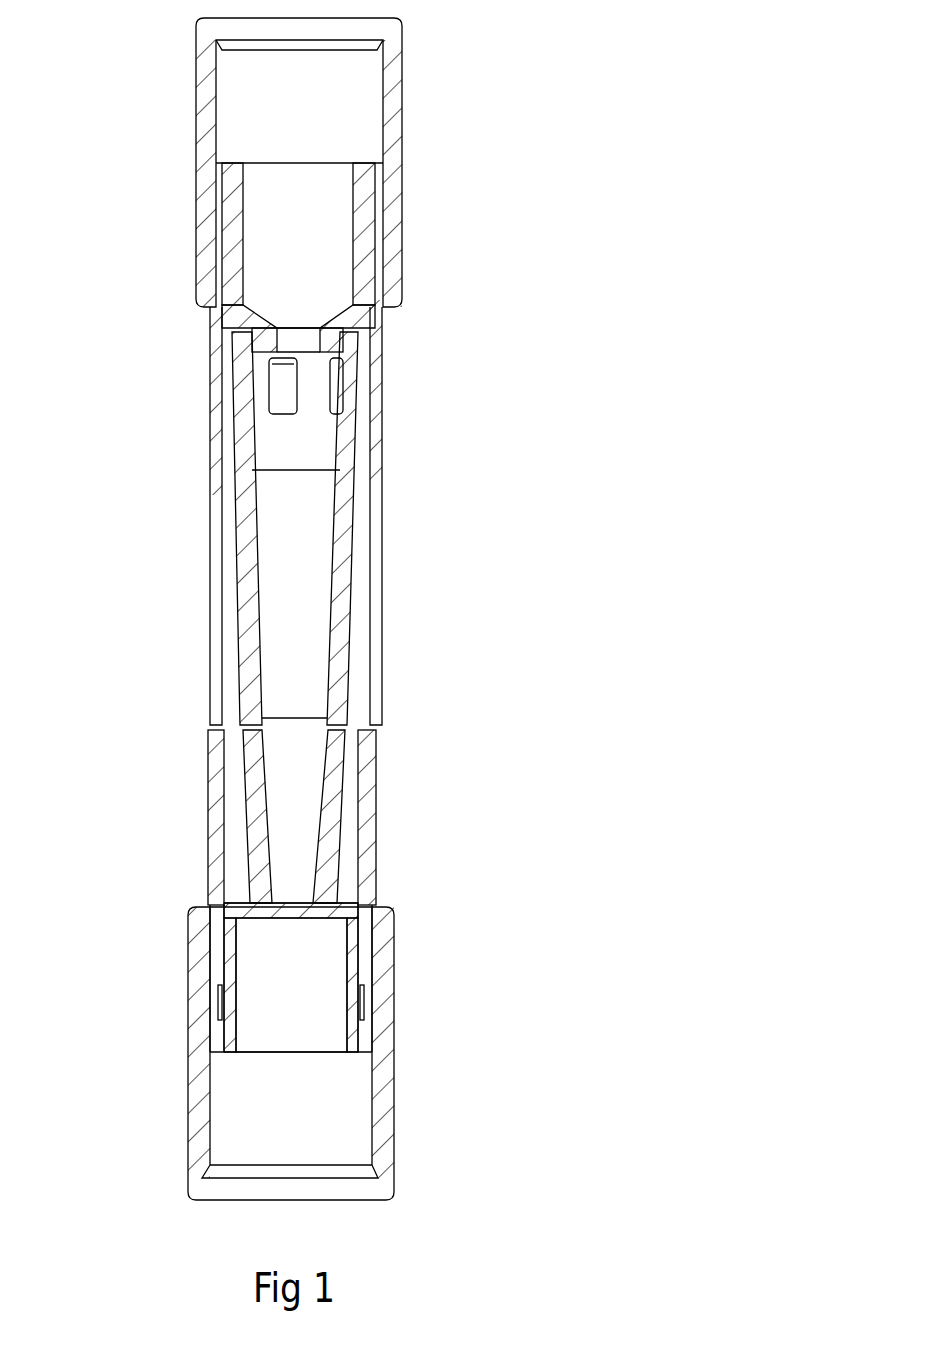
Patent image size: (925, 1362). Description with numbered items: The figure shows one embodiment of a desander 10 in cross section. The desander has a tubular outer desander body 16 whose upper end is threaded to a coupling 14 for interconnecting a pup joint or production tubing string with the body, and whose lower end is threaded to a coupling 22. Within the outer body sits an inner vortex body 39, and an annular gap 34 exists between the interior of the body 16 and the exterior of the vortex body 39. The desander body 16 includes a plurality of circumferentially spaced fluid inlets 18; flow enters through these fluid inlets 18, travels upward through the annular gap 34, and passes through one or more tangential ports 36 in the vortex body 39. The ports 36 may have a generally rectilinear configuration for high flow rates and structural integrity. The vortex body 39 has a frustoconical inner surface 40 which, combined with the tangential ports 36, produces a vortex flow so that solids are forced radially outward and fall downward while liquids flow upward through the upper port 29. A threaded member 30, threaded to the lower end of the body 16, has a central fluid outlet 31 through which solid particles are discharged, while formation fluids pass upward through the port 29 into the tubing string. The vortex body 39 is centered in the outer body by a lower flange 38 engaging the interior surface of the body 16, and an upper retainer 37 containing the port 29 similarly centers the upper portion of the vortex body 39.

The desander 10 is at (552, 541).
The coupling 14 is at (388, 118).
The outer desander body 16 is at (218, 780).
The fluid inlets 18 is at (378, 625).
The coupling 22 is at (383, 1085).
The upper port 29 is at (300, 335).
The threaded member 30 is at (357, 945).
The central fluid outlet 31 is at (278, 965).
The annular gap 34 is at (232, 440).
The ports 36 is at (283, 380).
The upper retainer 37 is at (360, 258).
The lower flange 38 is at (237, 910).
The inner vortex body 39 is at (352, 465).
The frustoconical inner surface 40 is at (345, 760).